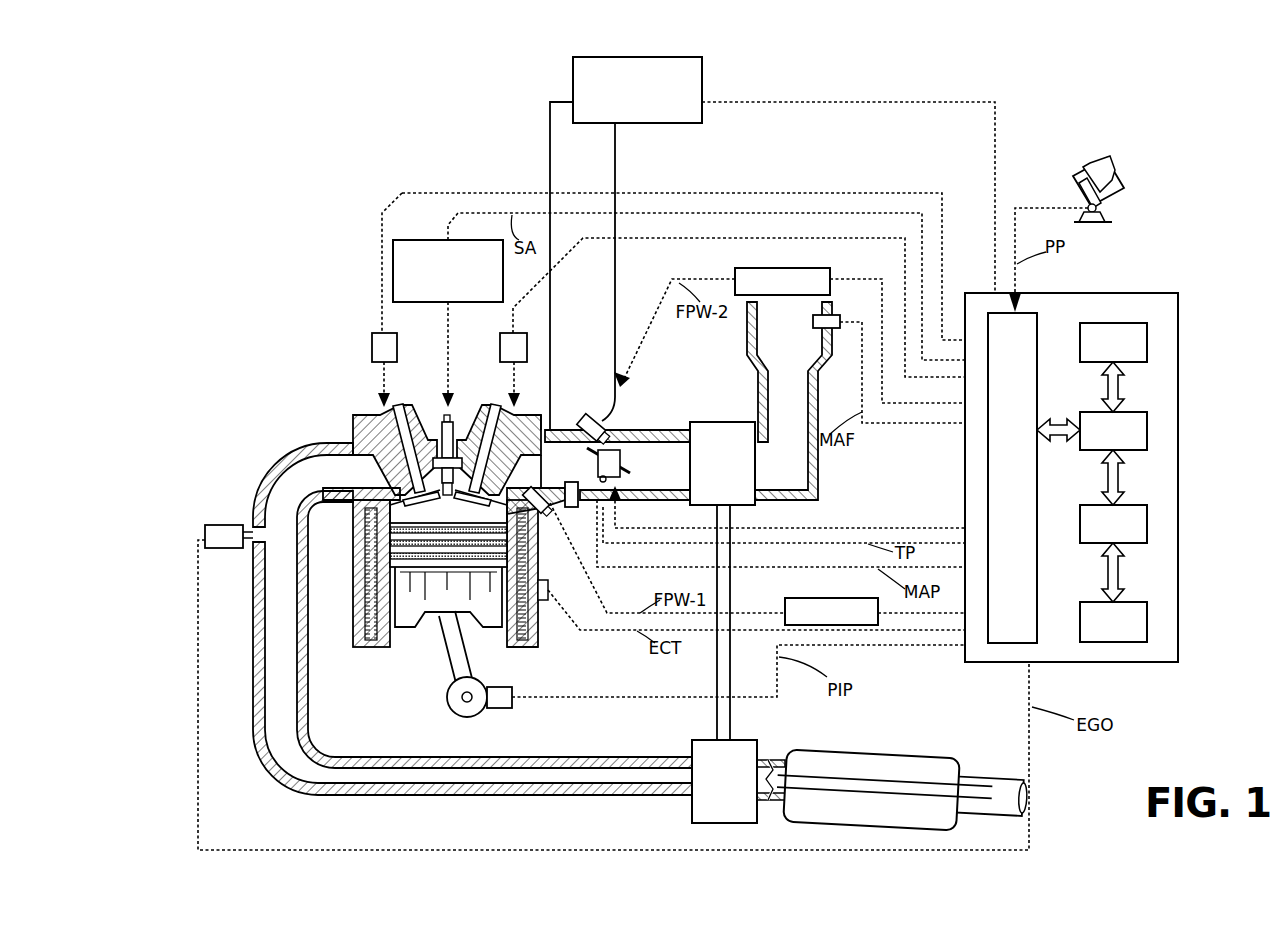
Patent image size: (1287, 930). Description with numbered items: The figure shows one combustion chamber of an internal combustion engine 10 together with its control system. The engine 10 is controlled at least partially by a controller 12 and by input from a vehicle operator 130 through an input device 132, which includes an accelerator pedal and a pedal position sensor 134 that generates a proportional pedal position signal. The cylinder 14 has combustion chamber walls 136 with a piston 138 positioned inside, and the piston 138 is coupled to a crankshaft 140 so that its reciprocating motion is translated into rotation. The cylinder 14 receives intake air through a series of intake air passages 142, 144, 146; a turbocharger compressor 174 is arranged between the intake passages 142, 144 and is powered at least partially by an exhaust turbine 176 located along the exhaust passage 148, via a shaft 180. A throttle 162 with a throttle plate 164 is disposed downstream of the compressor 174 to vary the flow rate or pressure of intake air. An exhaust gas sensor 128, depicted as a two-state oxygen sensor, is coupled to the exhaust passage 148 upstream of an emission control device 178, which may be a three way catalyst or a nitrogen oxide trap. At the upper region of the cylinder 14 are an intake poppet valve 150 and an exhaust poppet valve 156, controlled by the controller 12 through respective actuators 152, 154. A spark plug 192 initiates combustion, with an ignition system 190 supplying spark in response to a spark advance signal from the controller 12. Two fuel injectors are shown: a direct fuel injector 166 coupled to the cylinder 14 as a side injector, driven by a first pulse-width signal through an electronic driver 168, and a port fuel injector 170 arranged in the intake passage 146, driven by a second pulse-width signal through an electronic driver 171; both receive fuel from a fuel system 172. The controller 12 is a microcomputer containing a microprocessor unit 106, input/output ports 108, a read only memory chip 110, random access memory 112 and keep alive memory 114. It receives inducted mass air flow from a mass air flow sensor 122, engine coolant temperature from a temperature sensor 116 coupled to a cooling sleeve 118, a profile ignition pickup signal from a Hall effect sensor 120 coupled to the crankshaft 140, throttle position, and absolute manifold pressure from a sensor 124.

The internal combustion engine 10 is at (288, 369).
The controller 12 is at (1109, 466).
The cylinder 14 is at (367, 518).
The microprocessor unit 106 is at (1147, 432).
The input/output ports 108 is at (1037, 318).
The read only memory chip 110 is at (1147, 342).
The random access memory 112 is at (1147, 523).
The keep alive memory 114 is at (1147, 626).
The temperature sensor 116 is at (549, 600).
The cooling sleeve 118 is at (537, 630).
The Hall effect sensor 120 is at (502, 708).
The mass air flow sensor 122 is at (832, 317).
The manifold pressure sensor 124 is at (580, 500).
The exhaust gas sensor 128 is at (205, 528).
The vehicle operator 130 is at (1122, 178).
The input device 132 is at (1077, 185).
The pedal position sensor 134 is at (1100, 209).
The combustion chamber walls 136 is at (386, 650).
The piston 138 is at (436, 630).
The crankshaft 140 is at (455, 712).
The intake air passage 142 is at (789, 401).
The intake air passage 144 is at (621, 461).
The intake air passage 146 is at (562, 451).
The exhaust passage 148 is at (472, 619).
The intake poppet valve 150 is at (462, 440).
The actuator 152 is at (500, 348).
The actuator 154 is at (372, 345).
The exhaust poppet valve 156 is at (388, 482).
The throttle 162 is at (614, 446).
The throttle plate 164 is at (622, 482).
The fuel injector 166 is at (538, 518).
The electronic driver 168 is at (786, 599).
The fuel injector 170 is at (596, 416).
The electronic driver 171 is at (736, 269).
The fuel system 172 is at (703, 58).
The compressor 174 is at (722, 463).
The exhaust turbine 176 is at (724, 781).
The emission control device 178 is at (872, 754).
The shaft 180 is at (732, 712).
The ignition system 190 is at (409, 240).
The spark plug 192 is at (440, 458).